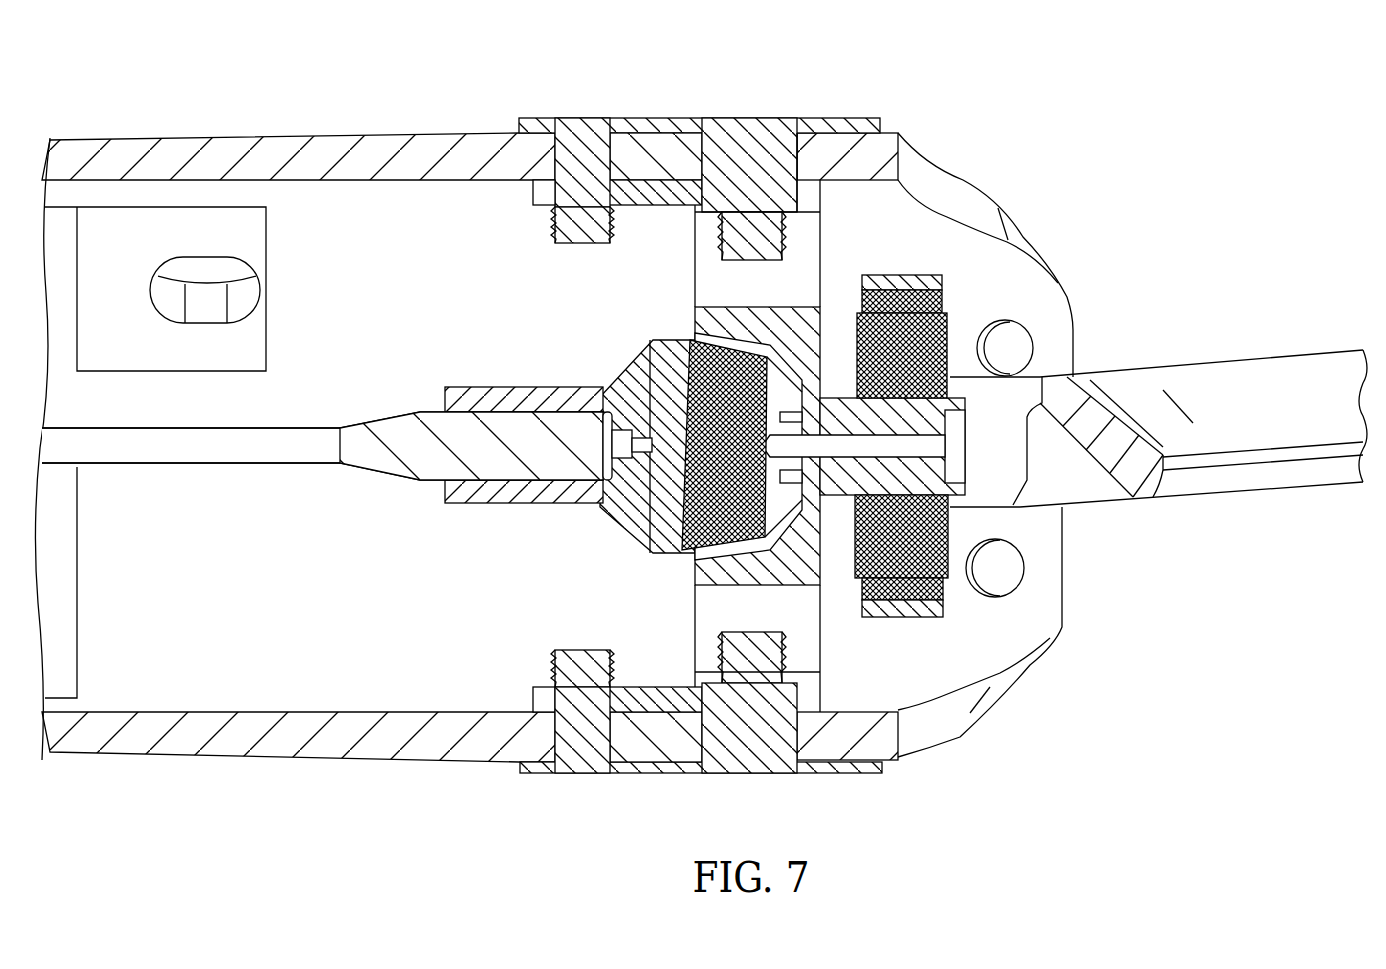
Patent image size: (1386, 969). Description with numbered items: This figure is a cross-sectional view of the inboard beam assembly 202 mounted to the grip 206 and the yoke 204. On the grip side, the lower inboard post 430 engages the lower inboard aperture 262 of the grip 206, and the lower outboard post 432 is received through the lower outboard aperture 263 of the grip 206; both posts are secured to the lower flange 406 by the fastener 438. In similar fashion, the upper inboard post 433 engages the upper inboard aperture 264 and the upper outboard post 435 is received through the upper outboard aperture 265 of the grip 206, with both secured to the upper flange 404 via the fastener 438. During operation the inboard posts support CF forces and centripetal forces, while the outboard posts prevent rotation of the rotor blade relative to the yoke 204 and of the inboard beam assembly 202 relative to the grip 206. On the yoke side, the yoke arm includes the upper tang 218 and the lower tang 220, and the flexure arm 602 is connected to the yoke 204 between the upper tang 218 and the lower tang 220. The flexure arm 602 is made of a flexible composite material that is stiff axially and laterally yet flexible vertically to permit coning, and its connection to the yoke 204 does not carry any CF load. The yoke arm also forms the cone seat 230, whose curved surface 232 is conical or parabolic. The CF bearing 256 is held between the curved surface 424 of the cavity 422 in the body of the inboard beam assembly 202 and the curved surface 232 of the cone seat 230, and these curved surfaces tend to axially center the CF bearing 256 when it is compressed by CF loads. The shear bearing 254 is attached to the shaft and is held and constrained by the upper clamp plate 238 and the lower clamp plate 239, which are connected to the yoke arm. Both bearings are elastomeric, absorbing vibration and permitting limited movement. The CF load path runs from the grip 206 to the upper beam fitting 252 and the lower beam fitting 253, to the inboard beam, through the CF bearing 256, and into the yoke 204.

The inboard beam assembly 202 is at (701, 422).
The yoke 204 is at (1225, 388).
The grip 206 is at (935, 178).
The upper tang 218 is at (500, 395).
The lower tang 220 is at (478, 495).
The cone seat 230 is at (612, 392).
The curved surface 232 is at (660, 378).
The upper clamp plate 238 is at (945, 287).
The lower clamp plate 239 is at (946, 607).
The upper beam fitting 252 is at (641, 118).
The lower beam fitting 253 is at (663, 775).
The shear bearing 254 is at (948, 345).
The CF bearing 256 is at (690, 553).
The lower inboard aperture 262 is at (768, 750).
The lower outboard aperture 263 is at (563, 745).
The upper inboard aperture 264 is at (796, 163).
The upper outboard aperture 265 is at (575, 183).
The upper flange 404 is at (668, 195).
The lower flange 406 is at (646, 700).
The cavity 422 is at (720, 580).
The curved surface 424 is at (765, 330).
The lower inboard post 430 is at (751, 737).
The lower outboard post 432 is at (558, 704).
The upper inboard post 433 is at (790, 150).
The upper outboard post 435 is at (586, 235).
The fastener 438 is at (777, 232).
The flexure arm 602 is at (160, 457).